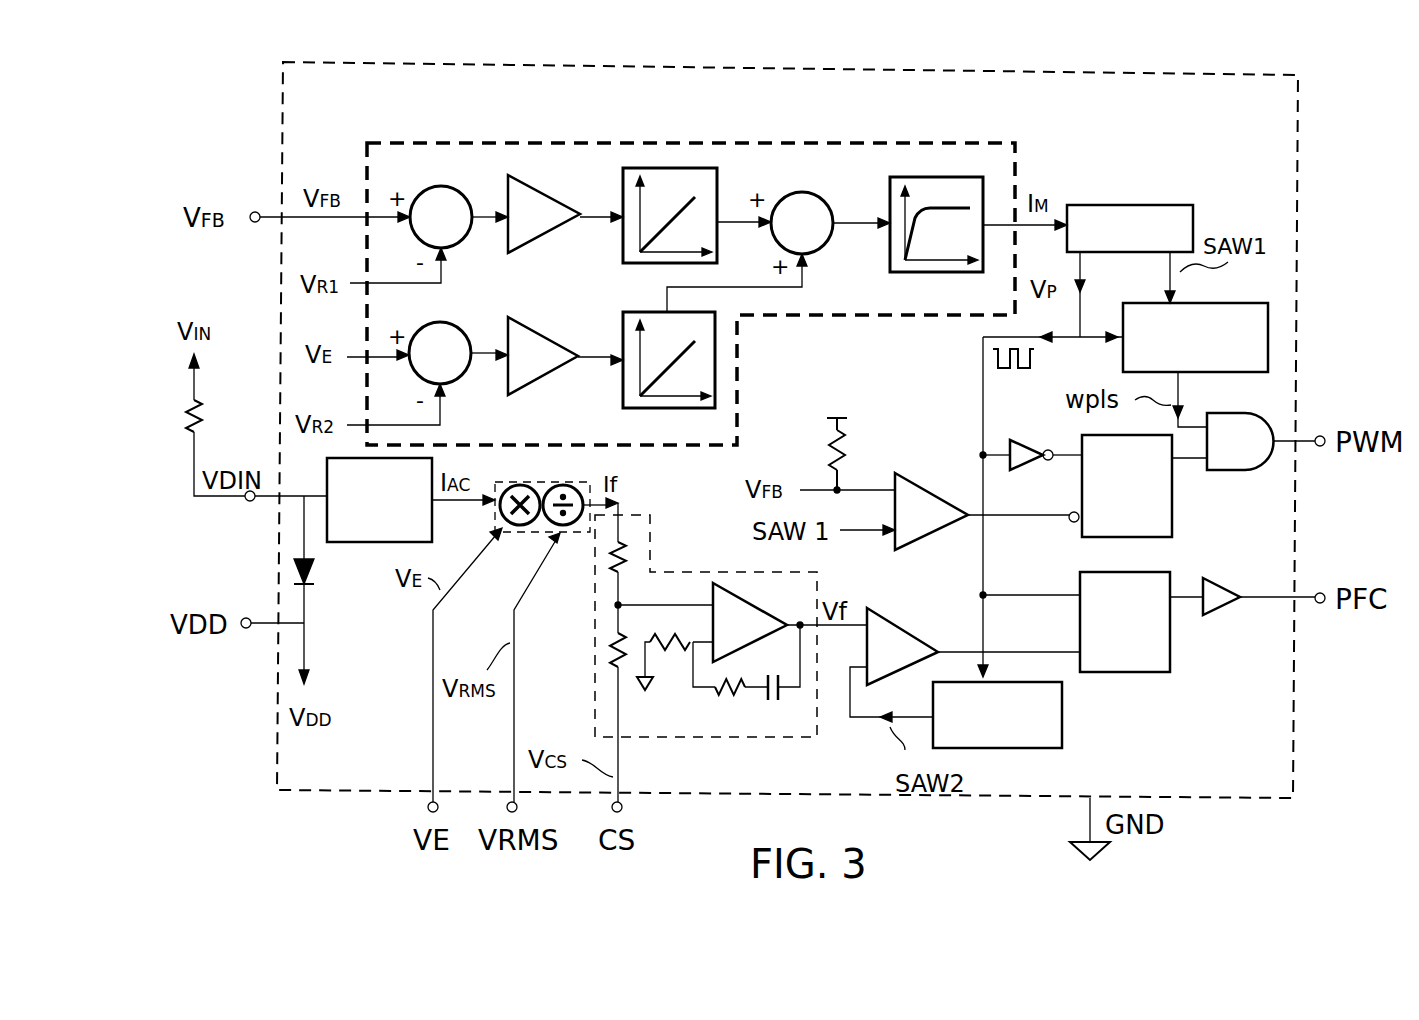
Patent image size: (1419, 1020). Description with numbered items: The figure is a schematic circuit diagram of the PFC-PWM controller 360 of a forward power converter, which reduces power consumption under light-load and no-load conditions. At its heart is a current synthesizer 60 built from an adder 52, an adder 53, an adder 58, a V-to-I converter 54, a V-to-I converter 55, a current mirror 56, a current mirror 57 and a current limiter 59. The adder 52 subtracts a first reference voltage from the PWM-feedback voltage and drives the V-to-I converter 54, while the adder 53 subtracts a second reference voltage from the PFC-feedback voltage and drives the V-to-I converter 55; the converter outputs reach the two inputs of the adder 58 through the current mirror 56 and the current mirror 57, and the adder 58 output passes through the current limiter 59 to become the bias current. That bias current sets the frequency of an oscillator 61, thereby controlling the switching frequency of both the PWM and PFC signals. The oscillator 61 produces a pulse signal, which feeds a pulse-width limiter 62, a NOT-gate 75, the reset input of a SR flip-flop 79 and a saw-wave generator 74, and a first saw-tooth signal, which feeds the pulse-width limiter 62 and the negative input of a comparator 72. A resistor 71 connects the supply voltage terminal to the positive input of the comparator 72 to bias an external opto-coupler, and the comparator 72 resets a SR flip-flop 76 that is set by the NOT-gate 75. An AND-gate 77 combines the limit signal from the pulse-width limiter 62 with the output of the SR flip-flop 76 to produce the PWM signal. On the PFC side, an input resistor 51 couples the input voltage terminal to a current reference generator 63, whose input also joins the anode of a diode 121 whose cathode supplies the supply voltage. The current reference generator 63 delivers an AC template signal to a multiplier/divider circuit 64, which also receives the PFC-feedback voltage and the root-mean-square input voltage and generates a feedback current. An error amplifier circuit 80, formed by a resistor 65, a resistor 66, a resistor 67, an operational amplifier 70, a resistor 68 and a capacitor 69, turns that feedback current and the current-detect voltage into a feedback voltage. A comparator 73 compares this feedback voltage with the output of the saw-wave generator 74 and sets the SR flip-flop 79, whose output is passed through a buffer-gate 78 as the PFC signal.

The input resistor 51 is at (177, 421).
The adder 52 is at (438, 186).
The adder 53 is at (458, 325).
The V-to-I converter 54 is at (530, 178).
The V-to-I converter 55 is at (532, 392).
The current mirror 56 is at (692, 167).
The current mirror 57 is at (717, 350).
The adder 58 is at (802, 192).
The current limiter 59 is at (918, 175).
The current synthesizer 60 is at (1017, 162).
The oscillator 61 is at (1180, 203).
The pulse-width limiter 62 is at (1270, 350).
The current reference generator 63 is at (355, 545).
The multiplier/divider circuit 64 is at (527, 535).
The resistor 65 is at (630, 563).
The resistor 66 is at (603, 643).
The resistor 67 is at (670, 657).
The resistor 68 is at (727, 710).
The capacitor 69 is at (772, 710).
The operational amplifier 70 is at (722, 570).
The resistor 71 is at (820, 465).
The comparator 72 is at (910, 470).
The comparator 73 is at (910, 620).
The saw-wave generator 74 is at (1065, 722).
The NOT-gate 75 is at (1000, 440).
The SR flip-flop 76 is at (1173, 490).
The AND-gate 77 is at (1255, 480).
The buffer-gate 78 is at (1228, 615).
The SR flip-flop 79 is at (1175, 663).
The error amplifier circuit 80 is at (817, 718).
The diode 121 is at (320, 583).
The PFC-PWM controller 360 is at (1300, 168).